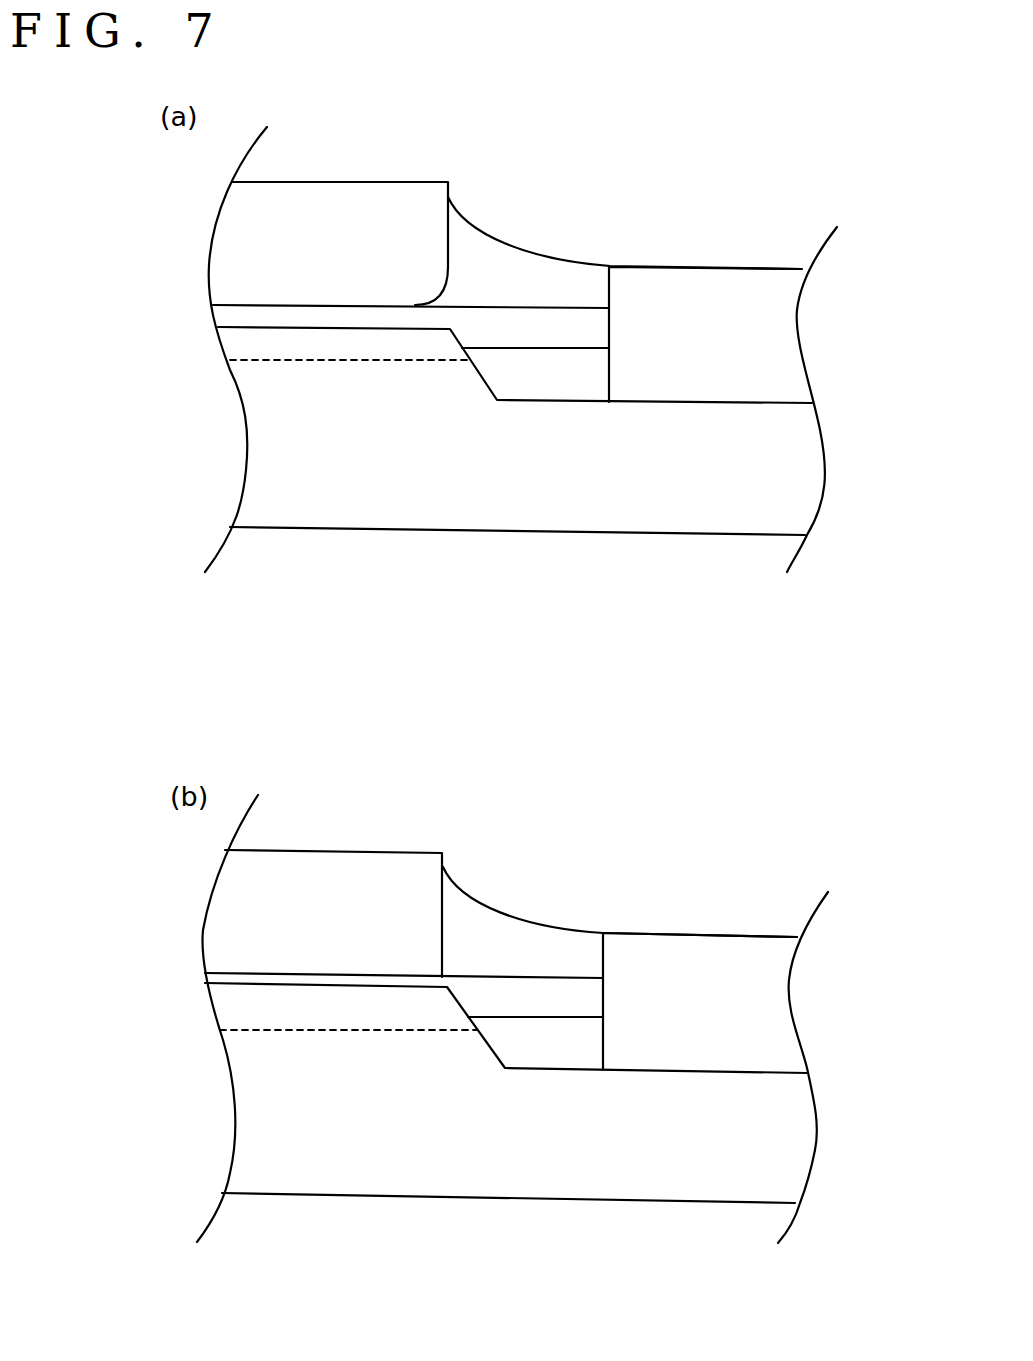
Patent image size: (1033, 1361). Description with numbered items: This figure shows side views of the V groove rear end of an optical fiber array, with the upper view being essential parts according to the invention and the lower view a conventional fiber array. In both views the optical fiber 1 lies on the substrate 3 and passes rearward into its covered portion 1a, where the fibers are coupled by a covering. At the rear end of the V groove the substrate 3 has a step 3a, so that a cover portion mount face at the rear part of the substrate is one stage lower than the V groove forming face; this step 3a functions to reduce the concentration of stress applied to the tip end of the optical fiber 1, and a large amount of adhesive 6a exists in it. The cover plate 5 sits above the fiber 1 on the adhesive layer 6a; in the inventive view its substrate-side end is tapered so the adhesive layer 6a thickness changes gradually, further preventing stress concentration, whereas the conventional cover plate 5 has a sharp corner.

The optical fiber 1 is at (566, 318).
The covered portion of the optical fibers 1a is at (723, 287).
The substrate 3 is at (482, 512).
The step 3a is at (487, 378).
The cover plate 5 is at (355, 200).
The adhesive layer 6a is at (510, 263).